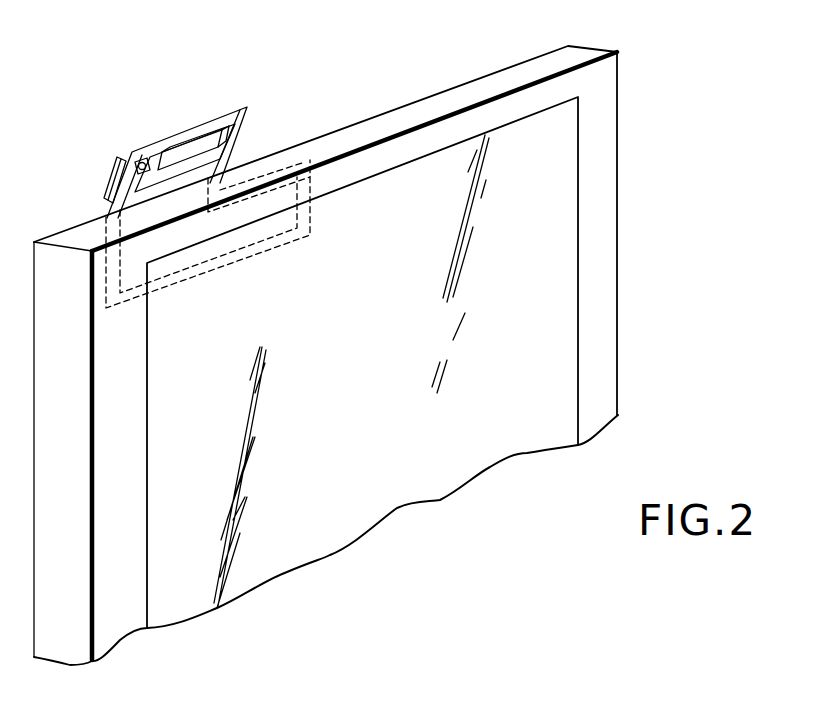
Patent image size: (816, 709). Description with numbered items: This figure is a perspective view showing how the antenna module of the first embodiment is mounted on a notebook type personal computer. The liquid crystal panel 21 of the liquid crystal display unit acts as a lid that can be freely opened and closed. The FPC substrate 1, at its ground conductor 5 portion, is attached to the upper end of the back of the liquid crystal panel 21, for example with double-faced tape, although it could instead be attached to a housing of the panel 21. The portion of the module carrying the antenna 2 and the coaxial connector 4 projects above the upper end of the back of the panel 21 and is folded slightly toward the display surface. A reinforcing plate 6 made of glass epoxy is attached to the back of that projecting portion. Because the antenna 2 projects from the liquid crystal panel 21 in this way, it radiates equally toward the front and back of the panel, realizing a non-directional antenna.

The FPC substrate 1 is at (183, 130).
The antenna 2 is at (236, 121).
The coaxial connector 4 is at (138, 170).
The ground conductor 5 is at (168, 240).
The reinforcing plate 6 is at (120, 162).
The liquid crystal panel 21 is at (341, 142).